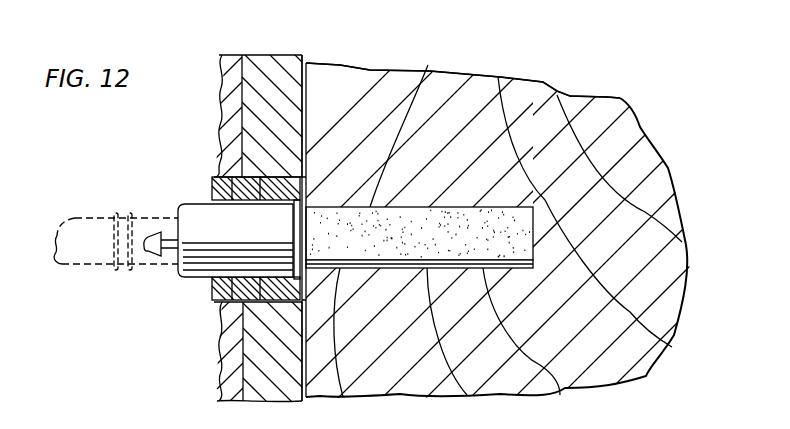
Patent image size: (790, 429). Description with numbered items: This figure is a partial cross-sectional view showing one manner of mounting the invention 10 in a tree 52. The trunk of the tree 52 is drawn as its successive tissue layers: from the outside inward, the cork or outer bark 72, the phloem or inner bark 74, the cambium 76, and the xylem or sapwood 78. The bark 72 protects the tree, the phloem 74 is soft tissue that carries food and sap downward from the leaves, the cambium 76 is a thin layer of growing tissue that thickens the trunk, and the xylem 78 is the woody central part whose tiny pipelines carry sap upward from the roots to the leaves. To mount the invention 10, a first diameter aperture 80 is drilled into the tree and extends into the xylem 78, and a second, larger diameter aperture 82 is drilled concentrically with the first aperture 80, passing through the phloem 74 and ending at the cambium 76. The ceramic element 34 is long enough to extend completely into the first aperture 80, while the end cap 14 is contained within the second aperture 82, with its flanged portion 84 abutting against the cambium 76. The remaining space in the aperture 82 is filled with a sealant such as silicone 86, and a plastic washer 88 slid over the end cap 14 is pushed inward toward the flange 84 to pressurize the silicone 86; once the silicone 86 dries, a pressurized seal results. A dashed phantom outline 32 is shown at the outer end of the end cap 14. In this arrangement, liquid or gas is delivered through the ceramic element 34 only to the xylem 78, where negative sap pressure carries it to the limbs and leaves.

The invention 10 is at (417, 162).
The end cap 14 is at (186, 211).
The phantom head/nut 32 is at (79, 266).
The ceramic element 34 is at (487, 270).
The tree 52 is at (618, 94).
The cork or outer bark 72 is at (216, 333).
The phloem or inner bark 74 is at (262, 56).
The cambium 76 is at (305, 57).
The xylem or sapwood 78 is at (415, 70).
The first diameter aperture 80 is at (506, 207).
The second aperture 82 is at (305, 310).
The flanged portion 84 is at (307, 199).
The silicone 86 is at (271, 301).
The plastic washer 88 is at (230, 180).